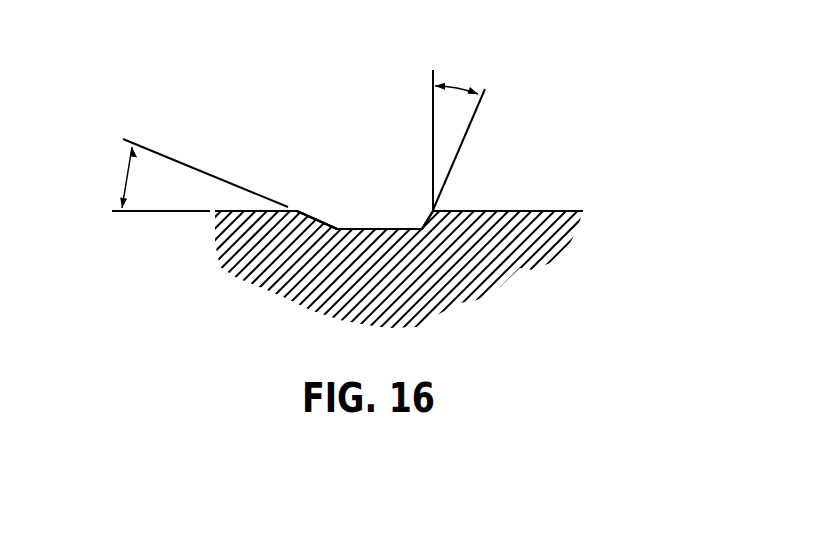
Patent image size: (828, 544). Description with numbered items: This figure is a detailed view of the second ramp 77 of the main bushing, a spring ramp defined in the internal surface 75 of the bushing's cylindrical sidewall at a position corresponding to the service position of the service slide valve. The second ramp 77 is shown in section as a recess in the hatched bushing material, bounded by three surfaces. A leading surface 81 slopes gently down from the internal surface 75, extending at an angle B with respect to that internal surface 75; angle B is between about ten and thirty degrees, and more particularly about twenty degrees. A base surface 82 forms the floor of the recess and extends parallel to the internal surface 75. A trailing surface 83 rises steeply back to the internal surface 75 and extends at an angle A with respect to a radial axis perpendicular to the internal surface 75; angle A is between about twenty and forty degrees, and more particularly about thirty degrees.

The internal surface 75 is at (497, 210).
The second ramp 77 is at (359, 151).
The leading surface 81 is at (324, 223).
The base surface 82 is at (380, 227).
The trailing surface 83 is at (428, 217).
The angle A is at (460, 82).
The angle B is at (118, 179).